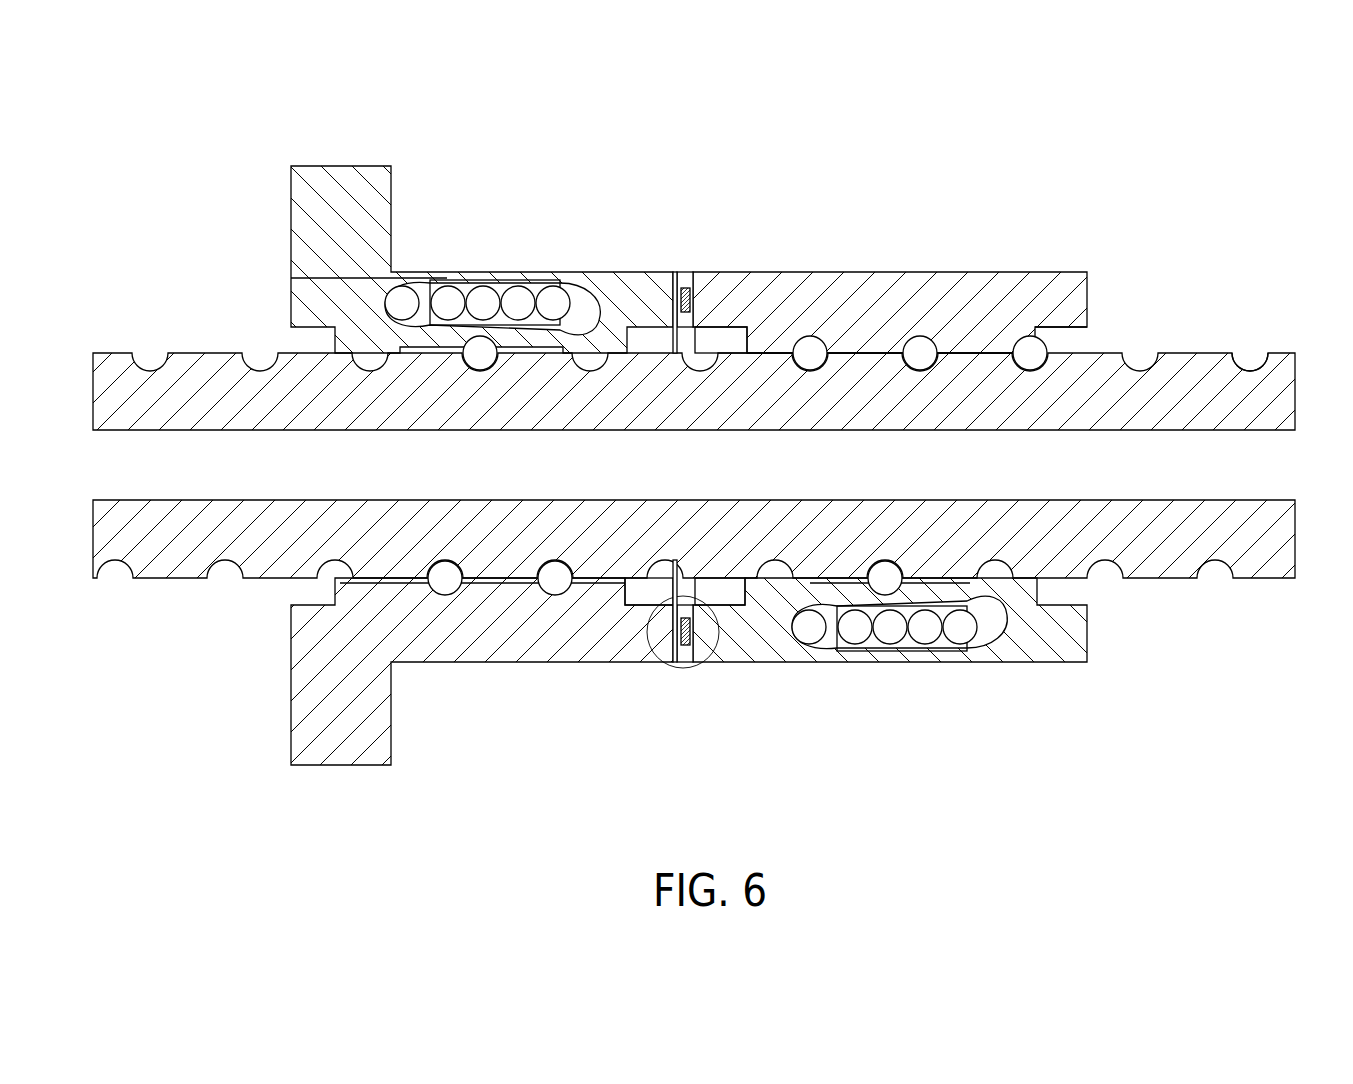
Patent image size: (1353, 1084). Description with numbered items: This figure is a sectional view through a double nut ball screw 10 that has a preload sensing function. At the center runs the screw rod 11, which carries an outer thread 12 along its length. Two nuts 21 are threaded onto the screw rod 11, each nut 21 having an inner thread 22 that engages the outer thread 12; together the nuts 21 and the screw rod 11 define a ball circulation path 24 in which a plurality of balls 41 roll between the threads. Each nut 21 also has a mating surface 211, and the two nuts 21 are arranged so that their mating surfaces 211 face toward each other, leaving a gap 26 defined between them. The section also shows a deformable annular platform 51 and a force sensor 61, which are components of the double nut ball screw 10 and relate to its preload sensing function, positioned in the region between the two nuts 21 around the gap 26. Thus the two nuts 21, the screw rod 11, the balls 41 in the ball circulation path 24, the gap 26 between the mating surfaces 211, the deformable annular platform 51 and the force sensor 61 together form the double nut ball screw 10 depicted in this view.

The double nut ball screw 10 is at (694, 416).
The screw rod 11 is at (694, 393).
The outer thread 12 is at (1260, 355).
The nut 21 is at (689, 463).
The inner thread 22 is at (862, 330).
The ball circulation path 24 is at (578, 298).
The gap 26 is at (689, 276).
The ball 41 is at (808, 340).
The deformable annular platform 51 is at (683, 285).
The force sensor 61 is at (671, 300).
The mating surface 211 is at (655, 655).